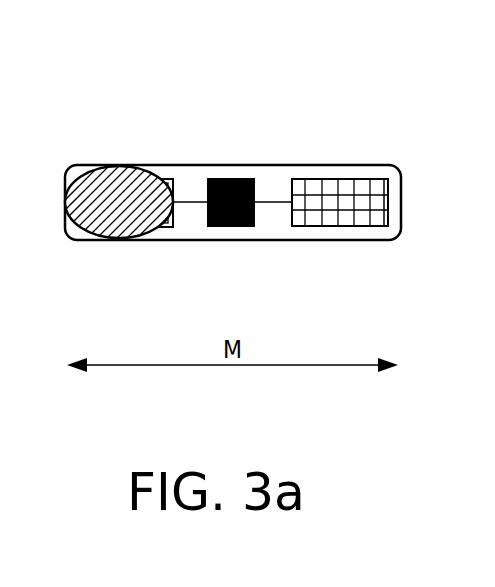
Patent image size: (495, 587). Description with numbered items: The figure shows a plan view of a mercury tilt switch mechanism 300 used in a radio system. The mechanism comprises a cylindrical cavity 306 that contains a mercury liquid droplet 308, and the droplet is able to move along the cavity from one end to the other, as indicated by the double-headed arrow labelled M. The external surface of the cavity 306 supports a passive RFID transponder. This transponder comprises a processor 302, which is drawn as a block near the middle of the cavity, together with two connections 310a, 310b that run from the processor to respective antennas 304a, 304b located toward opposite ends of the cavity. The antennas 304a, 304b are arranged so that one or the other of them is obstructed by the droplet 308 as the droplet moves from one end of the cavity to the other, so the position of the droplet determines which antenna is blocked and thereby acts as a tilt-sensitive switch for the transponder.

The mercury tilt switch mechanism 300 is at (408, 83).
The processor 302 is at (232, 227).
The antenna 304a is at (176, 179).
The antenna 304b is at (380, 205).
The cylindrical cavity 306 is at (318, 165).
The mercury liquid droplet 308 is at (110, 165).
The connection 310a is at (188, 202).
The connection 310b is at (278, 202).